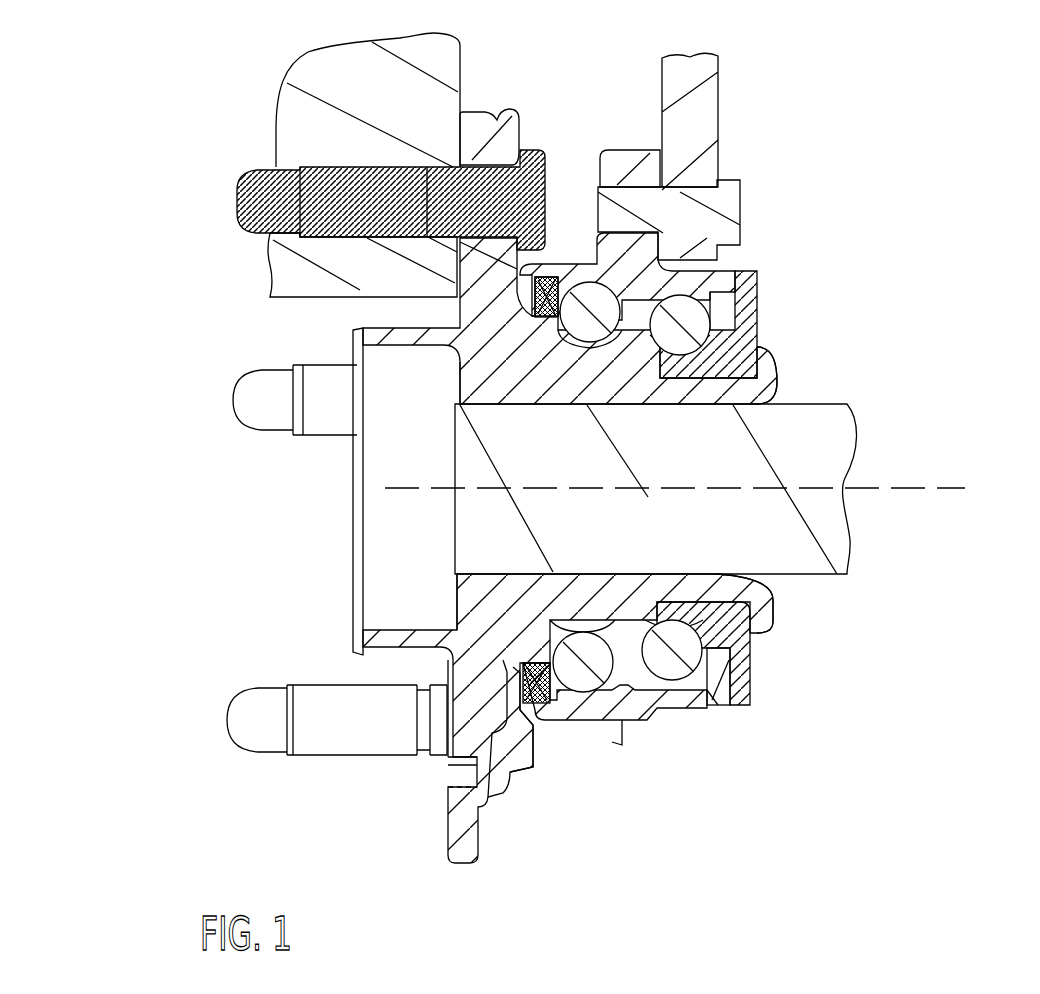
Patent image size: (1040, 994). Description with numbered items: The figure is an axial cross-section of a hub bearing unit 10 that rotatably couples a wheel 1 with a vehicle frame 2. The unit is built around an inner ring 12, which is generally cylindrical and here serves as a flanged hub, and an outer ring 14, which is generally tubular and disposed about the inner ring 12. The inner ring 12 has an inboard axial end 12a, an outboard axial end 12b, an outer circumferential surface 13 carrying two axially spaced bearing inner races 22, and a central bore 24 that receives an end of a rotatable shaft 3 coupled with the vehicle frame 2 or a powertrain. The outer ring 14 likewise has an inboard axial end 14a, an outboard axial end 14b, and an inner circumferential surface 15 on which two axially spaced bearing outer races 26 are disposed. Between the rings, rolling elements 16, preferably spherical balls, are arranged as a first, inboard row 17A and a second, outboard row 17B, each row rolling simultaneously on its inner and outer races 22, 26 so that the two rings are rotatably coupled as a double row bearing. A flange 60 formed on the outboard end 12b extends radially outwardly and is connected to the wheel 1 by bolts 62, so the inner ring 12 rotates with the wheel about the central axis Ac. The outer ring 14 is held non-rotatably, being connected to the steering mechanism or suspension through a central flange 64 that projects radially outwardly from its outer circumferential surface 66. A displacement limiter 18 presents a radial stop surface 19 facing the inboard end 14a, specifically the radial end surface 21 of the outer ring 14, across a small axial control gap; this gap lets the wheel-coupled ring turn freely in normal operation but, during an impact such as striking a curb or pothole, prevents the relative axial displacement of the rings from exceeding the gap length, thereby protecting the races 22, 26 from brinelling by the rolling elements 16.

The wheel 1 is at (290, 60).
The vehicle frame 2 is at (708, 101).
The shaft 3 is at (840, 423).
The hub bearing unit 10 is at (121, 345).
The inner ring 12 is at (806, 610).
The inboard axial end 12a is at (773, 375).
The outboard axial end 12b is at (500, 345).
The outer circumferential surface 13 is at (648, 497).
The outer ring 14 is at (692, 768).
The inboard axial end 14a is at (722, 690).
The outboard axial end 14b is at (533, 745).
The inner circumferential surface 15 is at (727, 668).
The rolling elements 16 is at (565, 655).
The first row of rolling elements 17A is at (663, 618).
The second row of rolling elements 17B is at (575, 612).
The displacement limiter 18 is at (801, 312).
The radial stop surface 19 is at (752, 667).
The radial end surface 21 is at (765, 285).
The bearing inner race 22 is at (548, 335).
The central bore 24 is at (458, 410).
The bearing outer race 26 is at (592, 342).
The flange 60 is at (498, 112).
The bolts 62 is at (300, 170).
The central flange 64 is at (627, 155).
The outer circumferential surface 66 is at (623, 748).
The central axis Ac is at (950, 488).